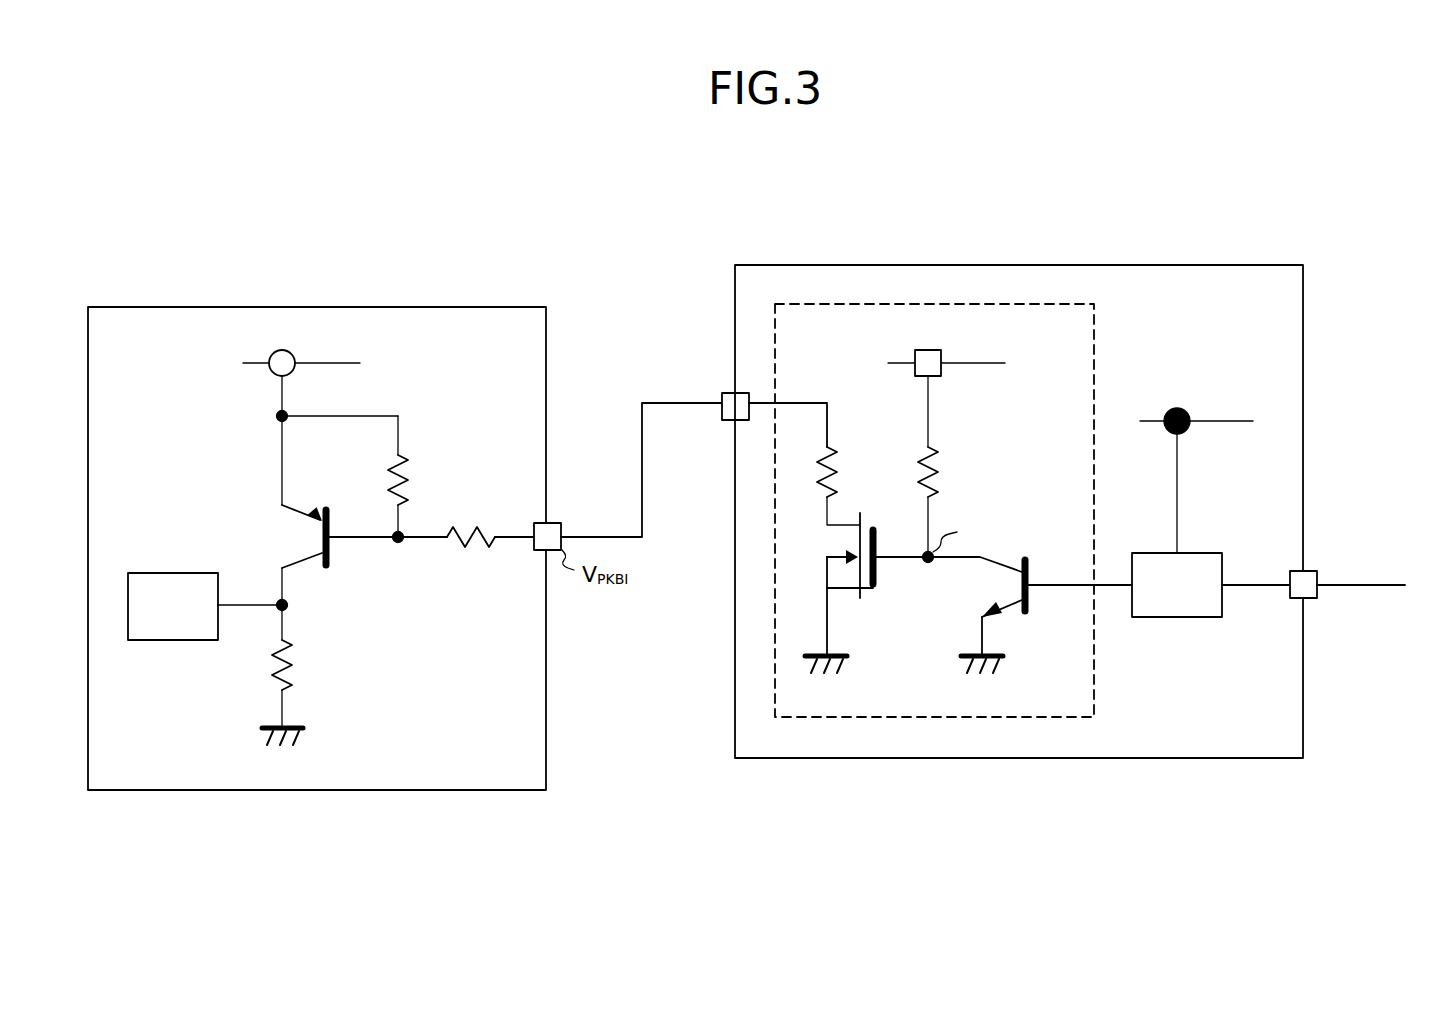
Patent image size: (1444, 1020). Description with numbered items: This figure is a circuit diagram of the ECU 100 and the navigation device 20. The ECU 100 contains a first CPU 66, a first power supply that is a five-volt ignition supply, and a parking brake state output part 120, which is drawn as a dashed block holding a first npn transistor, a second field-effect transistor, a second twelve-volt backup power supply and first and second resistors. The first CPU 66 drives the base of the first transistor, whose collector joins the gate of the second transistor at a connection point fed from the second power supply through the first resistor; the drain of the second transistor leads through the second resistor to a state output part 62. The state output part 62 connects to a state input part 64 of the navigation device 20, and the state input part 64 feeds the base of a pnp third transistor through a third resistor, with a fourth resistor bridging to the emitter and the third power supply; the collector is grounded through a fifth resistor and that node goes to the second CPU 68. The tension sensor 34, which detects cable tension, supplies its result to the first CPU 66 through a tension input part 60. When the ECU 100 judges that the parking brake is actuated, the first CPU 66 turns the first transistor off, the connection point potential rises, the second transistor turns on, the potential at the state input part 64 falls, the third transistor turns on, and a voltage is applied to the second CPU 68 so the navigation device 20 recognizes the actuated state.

The navigation device 20 is at (330, 307).
The ECU 100 is at (1026, 265).
The parking brake state output part 120 is at (1100, 678).
The state output part 62 is at (721, 392).
The state input part 64 is at (562, 524).
The first CPU 66 is at (1200, 553).
The second CPU 68 is at (180, 642).
The tension input part 60 is at (1317, 572).
The tension sensor 34 is at (1380, 585).